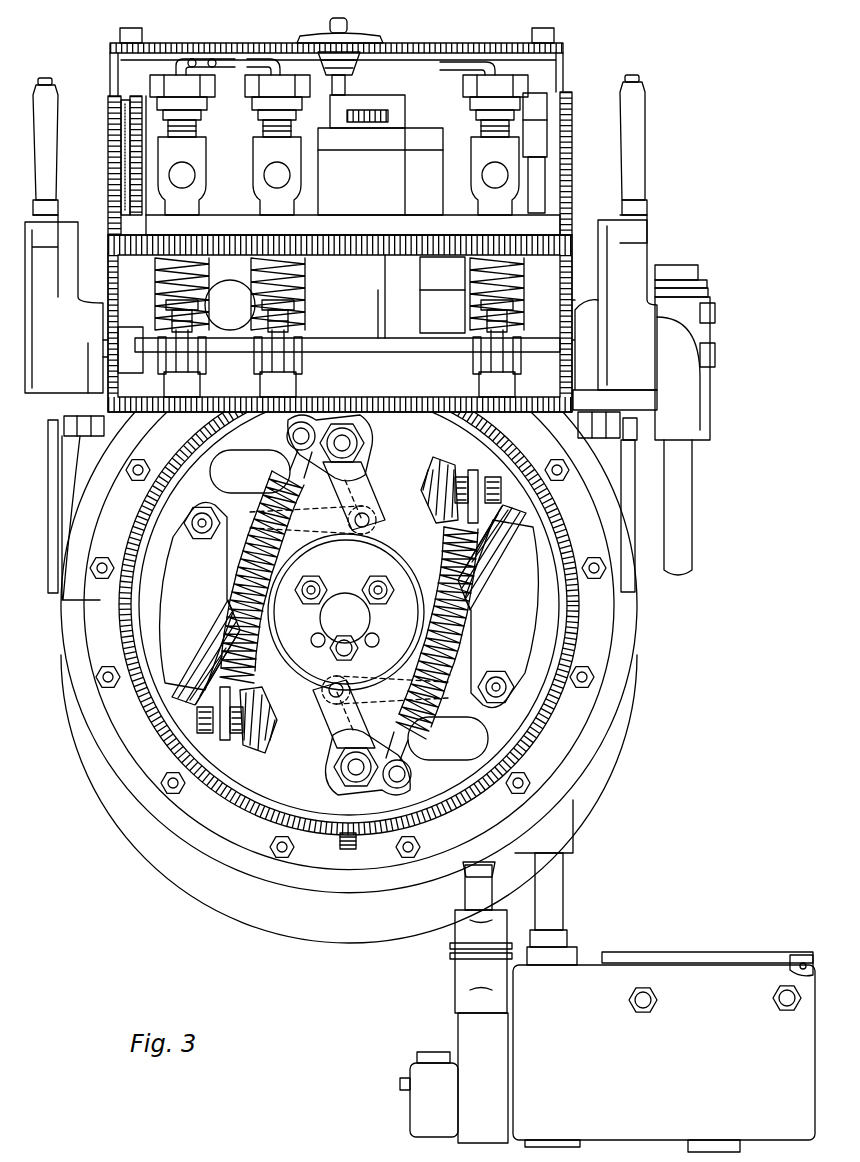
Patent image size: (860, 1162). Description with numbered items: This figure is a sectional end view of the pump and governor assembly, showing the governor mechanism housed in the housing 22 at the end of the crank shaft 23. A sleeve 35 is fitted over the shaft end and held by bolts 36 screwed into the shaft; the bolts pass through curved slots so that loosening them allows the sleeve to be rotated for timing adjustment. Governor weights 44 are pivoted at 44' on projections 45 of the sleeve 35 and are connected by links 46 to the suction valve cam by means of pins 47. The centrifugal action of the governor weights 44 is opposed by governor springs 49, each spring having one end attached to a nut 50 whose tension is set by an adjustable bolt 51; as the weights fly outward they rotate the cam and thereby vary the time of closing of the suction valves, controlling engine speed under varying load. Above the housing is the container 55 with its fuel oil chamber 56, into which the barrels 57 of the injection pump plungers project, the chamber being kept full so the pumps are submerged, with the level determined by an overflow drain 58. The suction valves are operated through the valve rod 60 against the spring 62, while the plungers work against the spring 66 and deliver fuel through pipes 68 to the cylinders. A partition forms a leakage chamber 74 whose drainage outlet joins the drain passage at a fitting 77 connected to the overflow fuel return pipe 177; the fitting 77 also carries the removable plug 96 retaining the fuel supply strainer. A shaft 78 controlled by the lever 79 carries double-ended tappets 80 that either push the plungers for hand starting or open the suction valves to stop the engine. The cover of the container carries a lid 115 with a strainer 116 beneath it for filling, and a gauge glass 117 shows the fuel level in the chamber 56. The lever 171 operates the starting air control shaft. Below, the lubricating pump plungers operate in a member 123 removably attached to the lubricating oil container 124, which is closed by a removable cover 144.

The housing 22 is at (342, 659).
The crank shaft 23 is at (345, 618).
The sleeve 35 is at (346, 612).
The bolts 36 is at (372, 582).
The governor weights 44 is at (349, 605).
The pivot 44' is at (349, 605).
The projections 45 is at (372, 472).
The links 46 is at (432, 700).
The pins 47 is at (378, 514).
The governor springs 49 is at (258, 552).
The nut 50 is at (442, 520).
The adjustable bolt 51 is at (485, 500).
The container 55 is at (565, 178).
The fuel oil chamber 56 is at (380, 155).
The barrels 57 is at (313, 639).
The overflow drain 58 is at (535, 145).
The valve rod 60 is at (275, 336).
The spring 62 is at (172, 272).
The spring 66 is at (168, 308).
The pipes 68 is at (245, 70).
The leakage chamber 74 is at (373, 296).
The fitting 77 is at (685, 368).
The shaft 78 is at (347, 348).
The lever 79 is at (633, 145).
The double-ended tappets 80 is at (258, 373).
The removable plug 96 is at (700, 273).
The lid 115 is at (383, 38).
The strainer 116 is at (347, 73).
The gauge glass 117 is at (125, 178).
The member 123 is at (456, 1016).
The lubricating oil container 124 is at (664, 1053).
The removable cover 144 is at (712, 953).
The lever 171 is at (50, 172).
The overflow fuel return pipe 177 is at (688, 521).